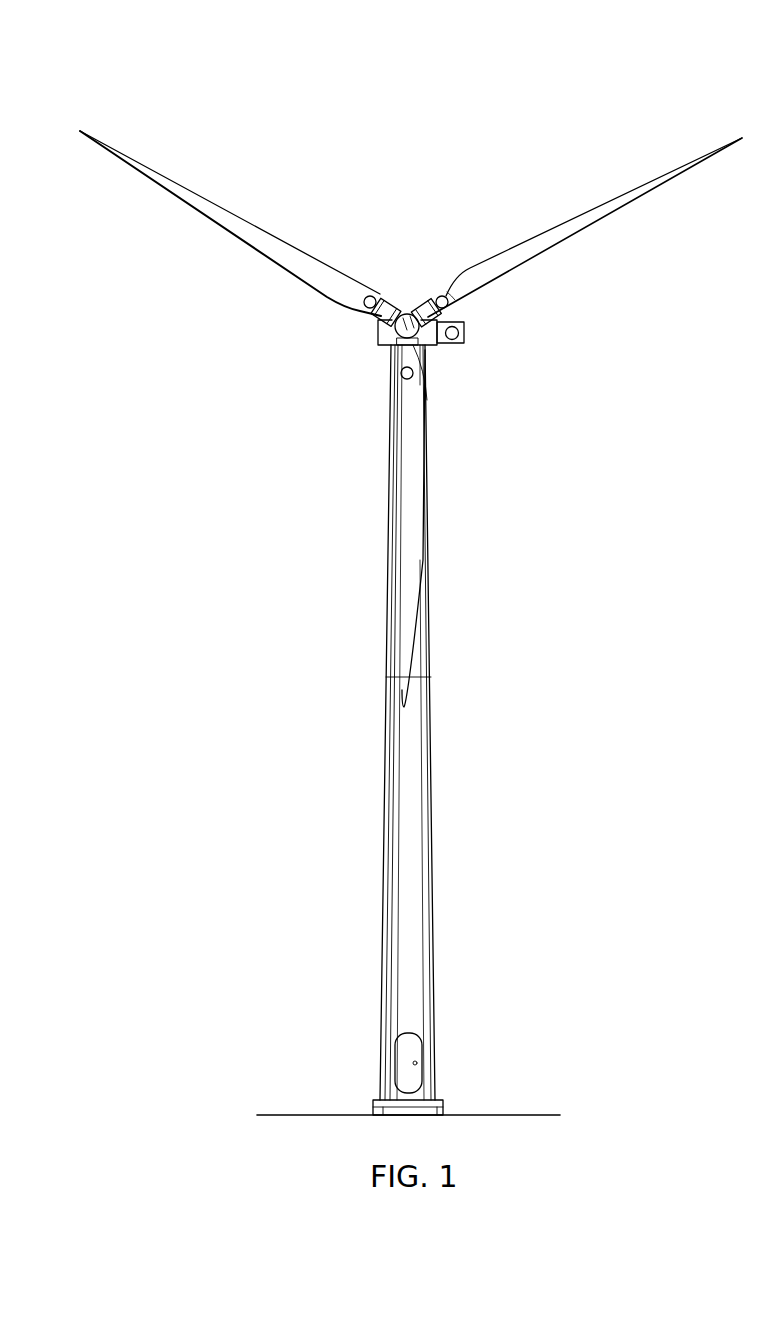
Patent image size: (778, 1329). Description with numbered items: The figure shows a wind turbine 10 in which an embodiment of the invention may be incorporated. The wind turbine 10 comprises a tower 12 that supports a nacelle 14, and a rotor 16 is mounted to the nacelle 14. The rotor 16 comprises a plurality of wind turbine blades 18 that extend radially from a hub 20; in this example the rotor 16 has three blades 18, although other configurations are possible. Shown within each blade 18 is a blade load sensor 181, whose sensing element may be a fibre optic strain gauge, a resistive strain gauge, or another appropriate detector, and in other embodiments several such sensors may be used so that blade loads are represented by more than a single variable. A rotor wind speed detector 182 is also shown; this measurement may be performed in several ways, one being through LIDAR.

The wind turbine 10 is at (632, 118).
The tower 12 is at (418, 777).
The nacelle 14 is at (443, 345).
The rotor 16 is at (365, 352).
The wind turbine blade 18 is at (305, 262).
The hub 20 is at (411, 313).
The blade load sensor 181 is at (378, 295).
The rotor wind speed detector 182 is at (470, 327).